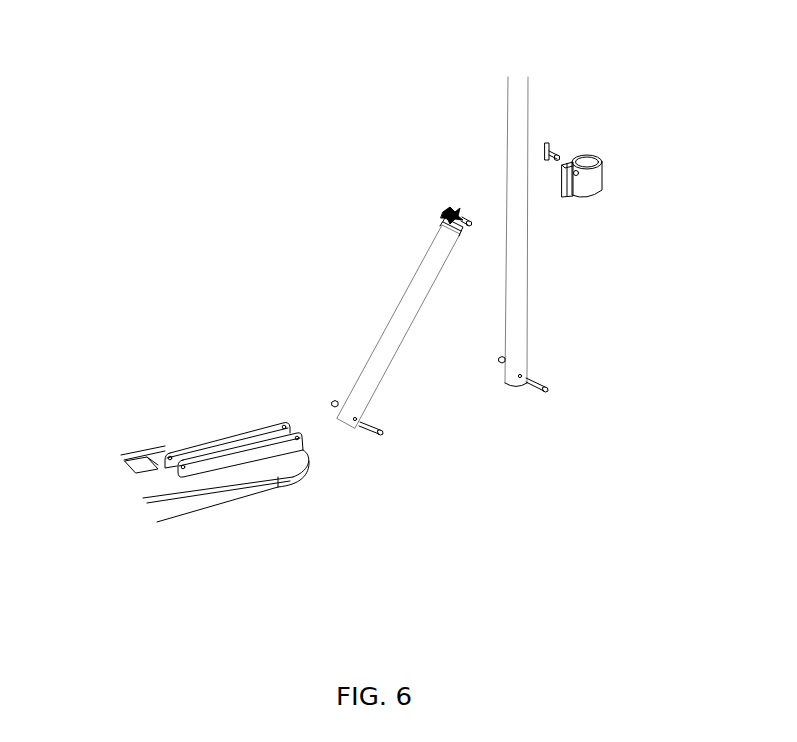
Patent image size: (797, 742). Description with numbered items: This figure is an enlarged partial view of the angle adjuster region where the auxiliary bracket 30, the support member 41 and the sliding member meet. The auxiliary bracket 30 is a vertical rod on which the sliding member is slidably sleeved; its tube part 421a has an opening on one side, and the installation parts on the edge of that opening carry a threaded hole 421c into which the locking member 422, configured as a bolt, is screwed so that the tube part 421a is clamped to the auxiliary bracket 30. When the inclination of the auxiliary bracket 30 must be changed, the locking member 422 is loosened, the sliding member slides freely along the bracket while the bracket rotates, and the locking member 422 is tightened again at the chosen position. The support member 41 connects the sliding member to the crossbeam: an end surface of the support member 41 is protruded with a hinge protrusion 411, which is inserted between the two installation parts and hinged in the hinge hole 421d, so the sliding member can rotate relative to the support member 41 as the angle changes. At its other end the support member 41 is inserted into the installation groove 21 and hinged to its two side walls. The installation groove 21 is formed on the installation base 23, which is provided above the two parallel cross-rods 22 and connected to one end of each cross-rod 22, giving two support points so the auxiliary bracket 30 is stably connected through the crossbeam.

The installation groove 21 is at (203, 448).
The cross-rod 22 is at (137, 470).
The installation base 23 is at (212, 484).
The auxiliary bracket 30 is at (518, 95).
The support member 41 is at (415, 300).
The hinge protrusion 411 is at (456, 217).
The tube part 421a is at (595, 170).
The threaded hole 421c is at (577, 173).
The hinge hole 421d is at (577, 187).
The locking member 422 is at (552, 149).